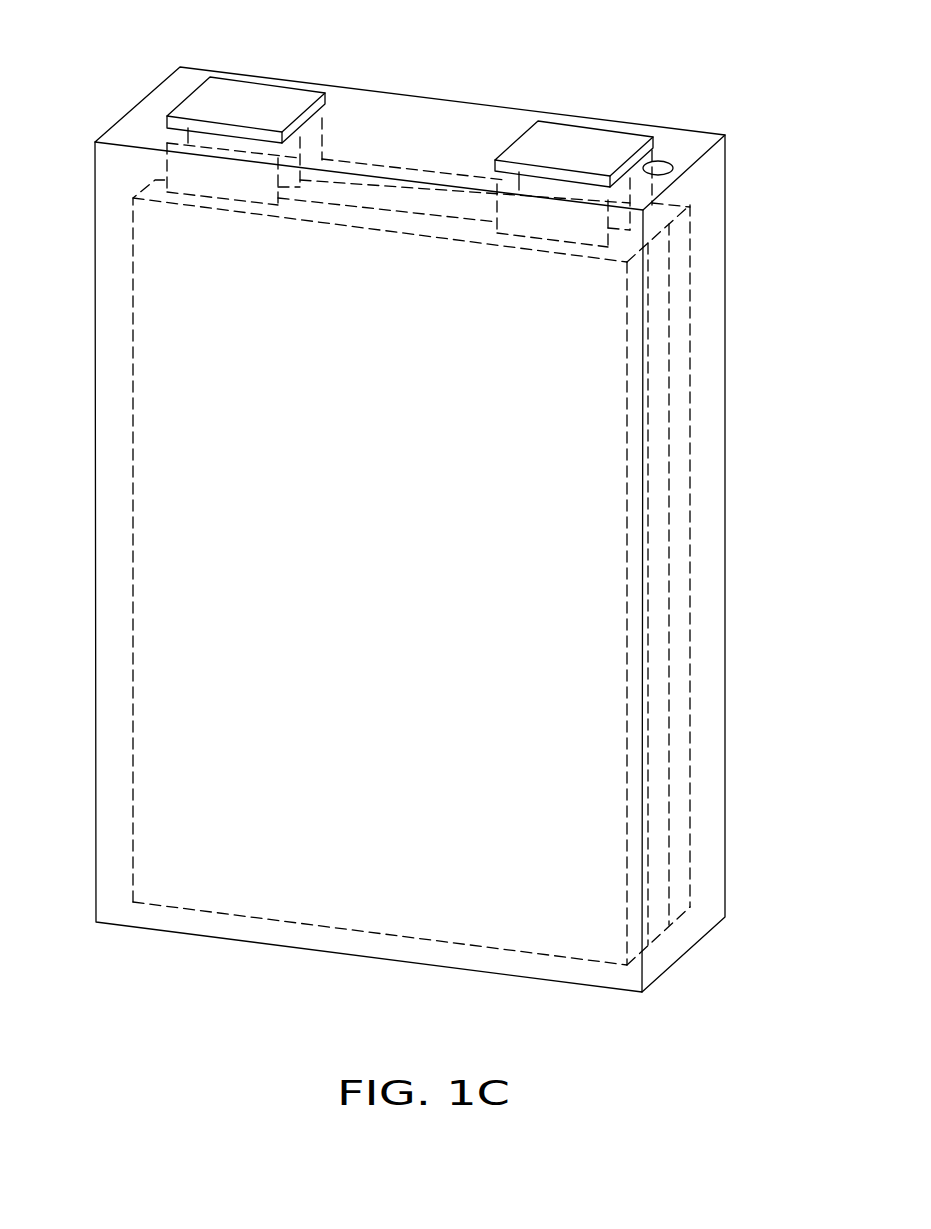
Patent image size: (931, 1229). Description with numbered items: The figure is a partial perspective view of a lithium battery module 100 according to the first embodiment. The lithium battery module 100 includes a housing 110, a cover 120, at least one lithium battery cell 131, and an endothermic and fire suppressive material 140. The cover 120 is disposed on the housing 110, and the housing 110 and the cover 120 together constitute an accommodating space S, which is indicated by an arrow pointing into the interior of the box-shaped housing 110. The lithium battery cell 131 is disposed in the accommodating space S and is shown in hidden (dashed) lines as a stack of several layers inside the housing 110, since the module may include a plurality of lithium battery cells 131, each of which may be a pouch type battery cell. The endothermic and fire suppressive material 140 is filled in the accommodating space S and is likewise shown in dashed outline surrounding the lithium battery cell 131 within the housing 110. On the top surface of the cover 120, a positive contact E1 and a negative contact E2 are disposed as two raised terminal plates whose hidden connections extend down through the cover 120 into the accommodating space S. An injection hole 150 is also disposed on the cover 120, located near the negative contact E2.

The lithium battery module 100 is at (797, 1053).
The housing 110 is at (718, 395).
The cover 120 is at (417, 123).
The lithium battery cell 131 is at (630, 497).
The endothermic and fire suppressive material 140 is at (707, 252).
The injection hole 150 is at (672, 160).
The positive contact E1 is at (258, 100).
The negative contact E2 is at (578, 140).
The accommodating space S is at (115, 388).